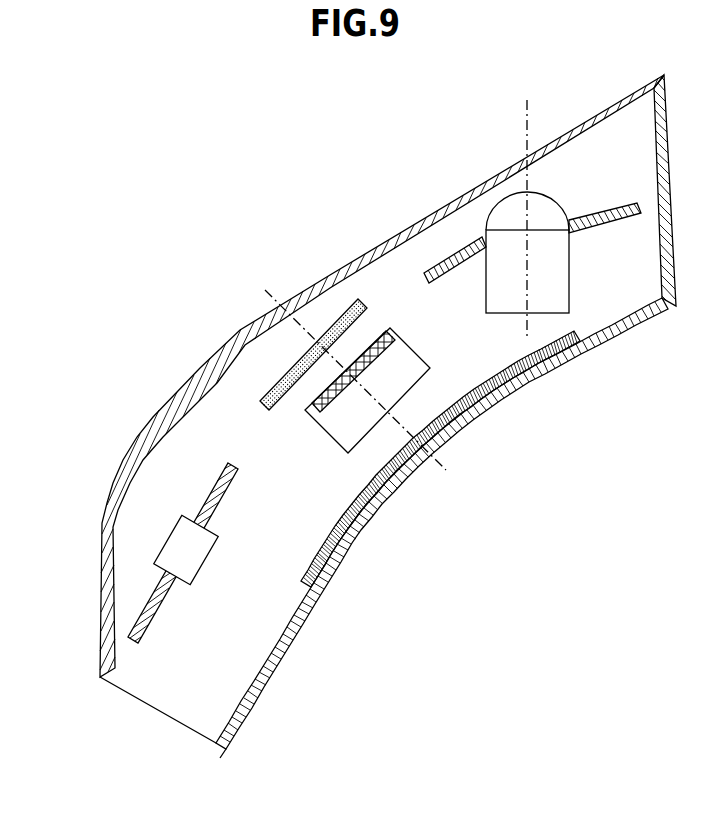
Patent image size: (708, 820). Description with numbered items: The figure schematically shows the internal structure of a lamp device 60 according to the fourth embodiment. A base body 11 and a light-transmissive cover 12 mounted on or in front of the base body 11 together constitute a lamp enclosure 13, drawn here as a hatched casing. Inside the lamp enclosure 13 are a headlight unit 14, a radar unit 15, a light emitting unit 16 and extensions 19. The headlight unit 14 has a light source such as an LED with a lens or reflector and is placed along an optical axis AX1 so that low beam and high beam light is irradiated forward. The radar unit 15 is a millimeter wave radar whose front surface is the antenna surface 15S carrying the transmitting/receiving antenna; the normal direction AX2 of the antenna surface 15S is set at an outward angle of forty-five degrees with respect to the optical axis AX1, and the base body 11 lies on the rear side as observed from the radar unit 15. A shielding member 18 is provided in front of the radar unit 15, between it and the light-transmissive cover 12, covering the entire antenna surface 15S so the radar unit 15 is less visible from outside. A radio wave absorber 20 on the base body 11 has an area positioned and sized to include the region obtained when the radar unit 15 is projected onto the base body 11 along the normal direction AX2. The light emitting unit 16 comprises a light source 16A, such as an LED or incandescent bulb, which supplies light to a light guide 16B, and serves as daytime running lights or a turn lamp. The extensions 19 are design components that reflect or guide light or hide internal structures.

The lamp device 60 is at (239, 155).
The lamp enclosure 13 is at (43, 653).
The light-transmissive cover 12 is at (420, 220).
The base body 11 is at (322, 600).
The headlight unit 14 is at (569, 300).
The extensions 19 is at (462, 248).
The radar unit 15 is at (391, 328).
The antenna surface 15S is at (379, 332).
The shielding member 18 is at (283, 377).
The radio wave absorber 20 is at (343, 530).
The light emitting unit 16 is at (28, 403).
The light source 16A is at (180, 540).
The light guide 16B is at (212, 488).
The optical axis AX1 is at (514, 216).
The normal direction AX2 is at (344, 367).